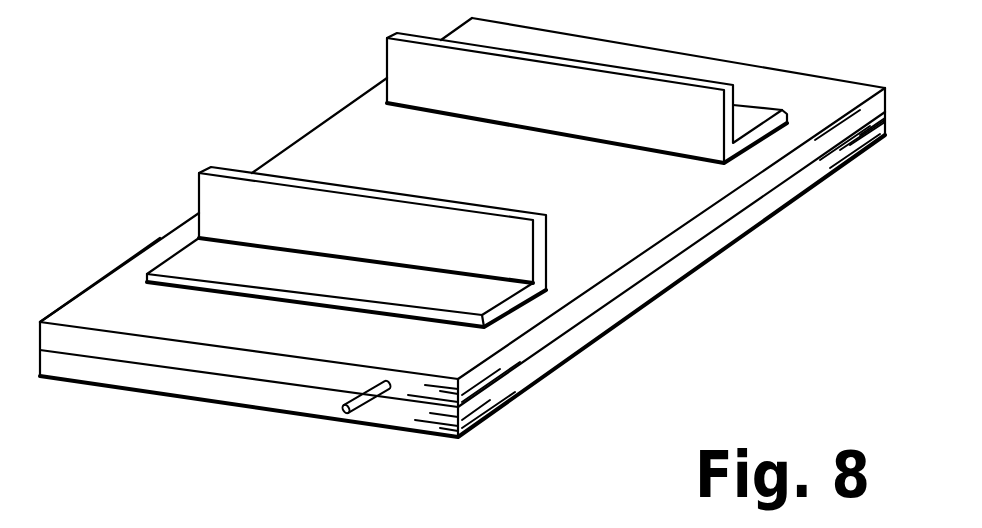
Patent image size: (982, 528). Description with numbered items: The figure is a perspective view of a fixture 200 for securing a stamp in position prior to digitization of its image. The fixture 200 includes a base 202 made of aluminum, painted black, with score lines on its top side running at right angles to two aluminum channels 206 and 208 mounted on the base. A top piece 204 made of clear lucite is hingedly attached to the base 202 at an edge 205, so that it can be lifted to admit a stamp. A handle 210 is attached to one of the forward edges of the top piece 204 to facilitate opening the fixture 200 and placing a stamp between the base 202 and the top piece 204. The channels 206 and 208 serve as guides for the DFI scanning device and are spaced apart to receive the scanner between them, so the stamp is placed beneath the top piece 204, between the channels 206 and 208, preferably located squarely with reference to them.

The fixture 200 is at (462, 265).
The base 202 is at (510, 404).
The top piece 204 is at (312, 160).
The edge 205 is at (161, 237).
The channel 206 is at (629, 149).
The channel 208 is at (549, 272).
The handle 210 is at (356, 420).